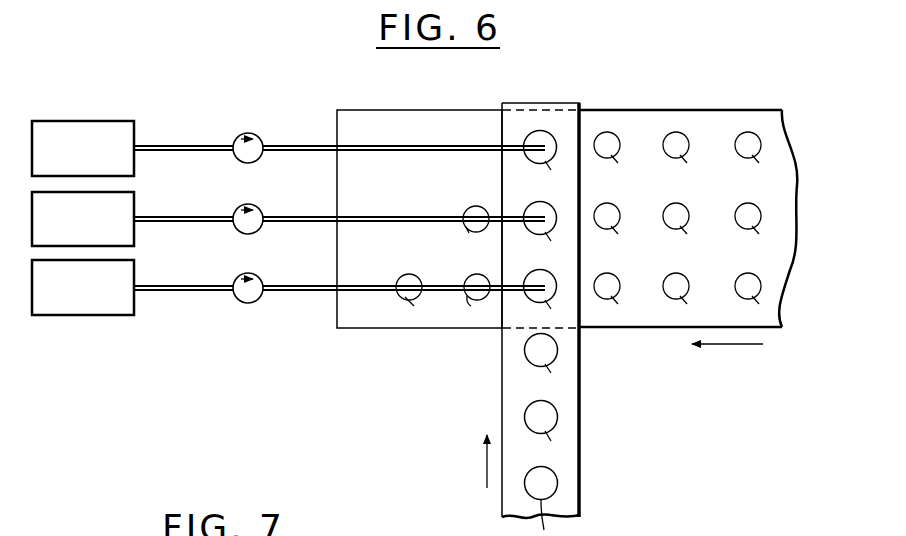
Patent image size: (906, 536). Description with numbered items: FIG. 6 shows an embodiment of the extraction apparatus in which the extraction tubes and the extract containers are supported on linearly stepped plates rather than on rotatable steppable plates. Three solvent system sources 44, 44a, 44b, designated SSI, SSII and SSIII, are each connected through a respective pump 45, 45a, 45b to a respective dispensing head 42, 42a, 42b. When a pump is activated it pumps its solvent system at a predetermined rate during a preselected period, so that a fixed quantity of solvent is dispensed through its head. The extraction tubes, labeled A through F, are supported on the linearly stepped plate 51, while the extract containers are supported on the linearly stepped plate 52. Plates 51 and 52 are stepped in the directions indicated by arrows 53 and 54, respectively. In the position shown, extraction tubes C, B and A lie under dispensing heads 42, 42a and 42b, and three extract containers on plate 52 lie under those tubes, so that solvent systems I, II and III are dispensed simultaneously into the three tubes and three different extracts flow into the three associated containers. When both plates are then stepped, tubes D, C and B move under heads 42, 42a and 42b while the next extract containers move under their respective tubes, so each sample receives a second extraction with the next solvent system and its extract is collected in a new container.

The source of solvent system 44 is at (136, 313).
The source of solvent system 44a is at (134, 241).
The source of solvent system 44b is at (89, 121).
The pump 45 is at (257, 296).
The pump 45a is at (257, 225).
The pump 45b is at (247, 133).
The dispensing head 42 is at (431, 234).
The dispensing head 42a is at (522, 217).
The dispensing head 42b is at (518, 143).
The linearly stepped plate 51 is at (552, 102).
The linearly stepped plate 52 is at (632, 110).
The arrow 53 is at (487, 463).
The arrow 54 is at (733, 344).